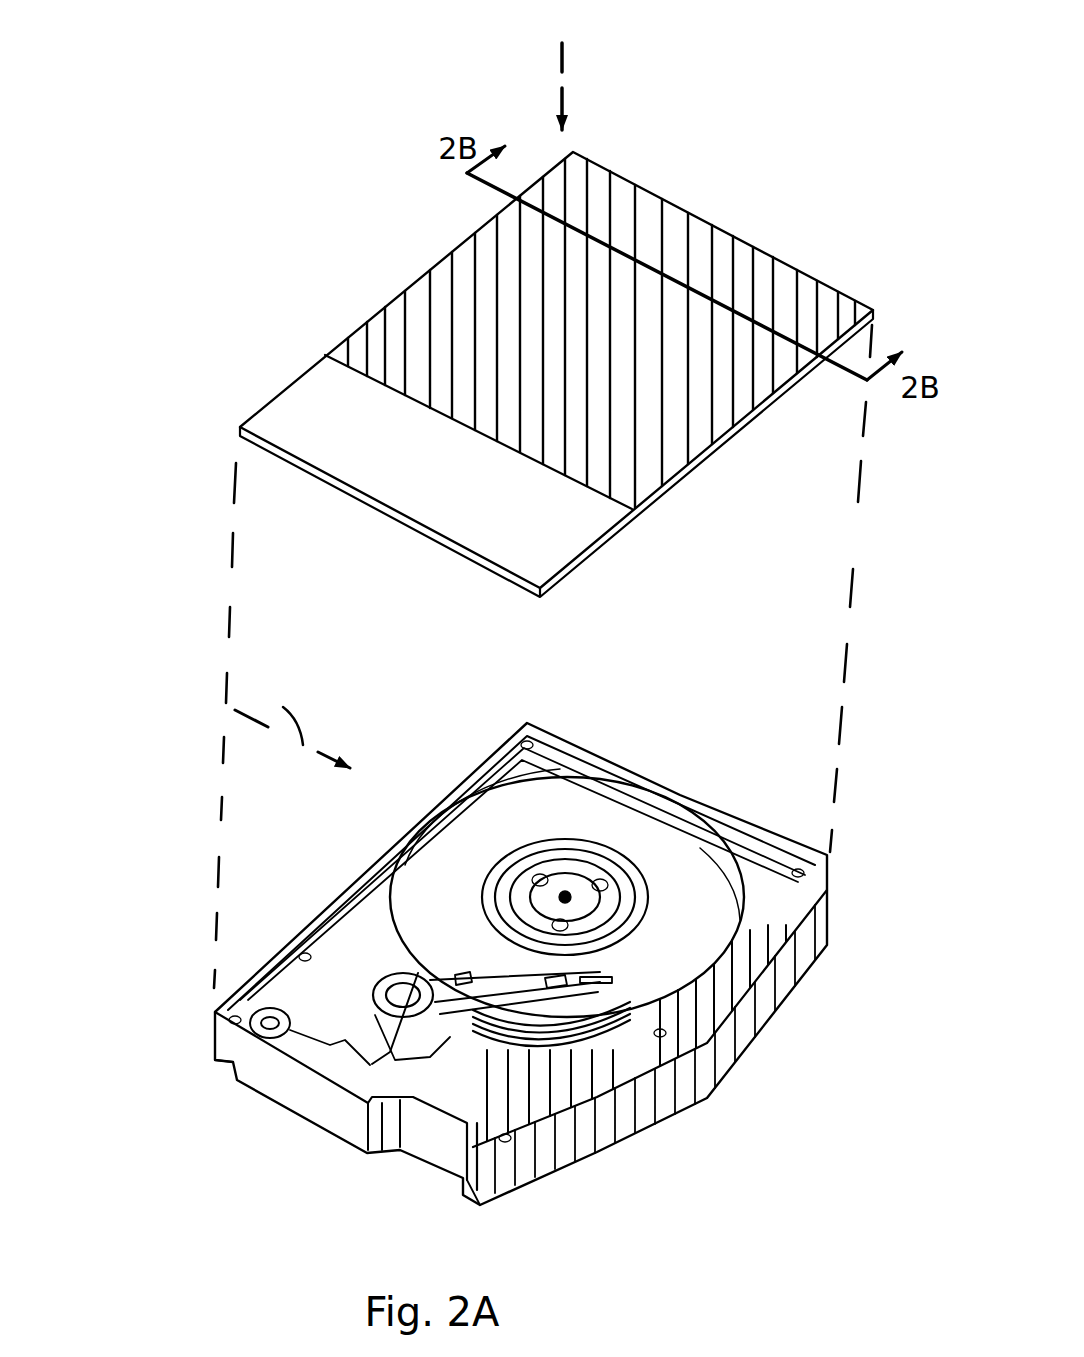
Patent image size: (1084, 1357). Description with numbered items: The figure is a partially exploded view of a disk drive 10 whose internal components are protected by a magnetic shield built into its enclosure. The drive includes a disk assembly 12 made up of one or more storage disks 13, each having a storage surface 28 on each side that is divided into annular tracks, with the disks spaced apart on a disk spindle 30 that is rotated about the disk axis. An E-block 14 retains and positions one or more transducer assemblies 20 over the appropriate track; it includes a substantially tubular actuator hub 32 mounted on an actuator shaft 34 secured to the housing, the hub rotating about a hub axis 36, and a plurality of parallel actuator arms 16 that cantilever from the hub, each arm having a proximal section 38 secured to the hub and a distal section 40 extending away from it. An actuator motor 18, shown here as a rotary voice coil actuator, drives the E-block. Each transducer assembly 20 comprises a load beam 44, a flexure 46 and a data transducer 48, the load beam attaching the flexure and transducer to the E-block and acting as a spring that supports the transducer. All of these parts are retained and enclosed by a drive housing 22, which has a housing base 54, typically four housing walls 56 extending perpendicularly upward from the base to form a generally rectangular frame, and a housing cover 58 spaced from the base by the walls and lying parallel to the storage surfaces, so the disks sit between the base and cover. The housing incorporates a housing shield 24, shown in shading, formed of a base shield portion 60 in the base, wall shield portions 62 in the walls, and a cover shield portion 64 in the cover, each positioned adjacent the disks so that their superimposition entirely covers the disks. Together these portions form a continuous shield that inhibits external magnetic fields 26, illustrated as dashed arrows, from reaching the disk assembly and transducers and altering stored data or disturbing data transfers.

The disk drive 10 is at (242, 857).
The disk assembly 12 is at (615, 822).
The storage disk 13 is at (700, 848).
The E-block 14 is at (425, 974).
The actuator arm 16 is at (475, 1048).
The actuator motor 18 is at (290, 1003).
The transducer assembly 20 is at (614, 980).
The drive housing 22 is at (752, 456).
The housing shield 24 is at (455, 230).
The external magnetic fields 26 is at (407, 385).
The storage surface 28 is at (515, 831).
The disk spindle 30 is at (585, 890).
The actuator hub 32 is at (375, 985).
The actuator shaft 34 is at (403, 975).
The hub axis 36 is at (400, 975).
The proximal section 38 is at (450, 975).
The distal section 40 is at (540, 985).
The load beam 44 is at (552, 975).
The flexure 46 is at (565, 980).
The data transducer 48 is at (578, 980).
The housing base 54 is at (499, 1125).
The housing wall 56 is at (230, 1003).
The housing cover 58 is at (645, 165).
The base shield portion 60 is at (570, 1087).
The wall shield portion 62 is at (383, 875).
The cover shield portion 64 is at (393, 335).